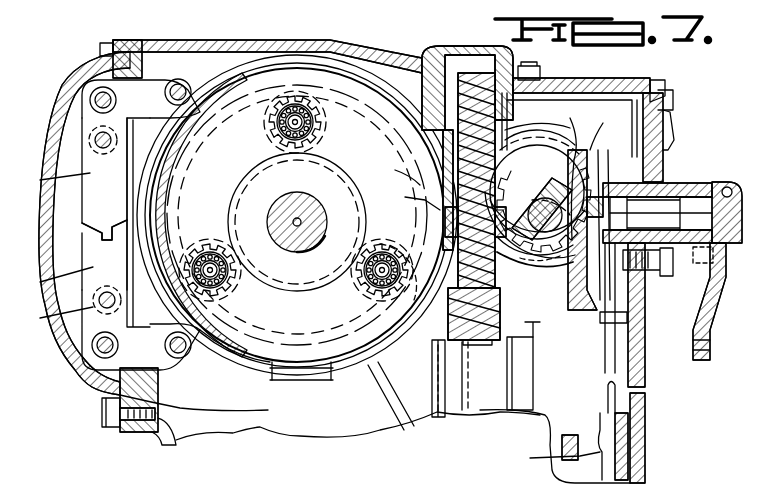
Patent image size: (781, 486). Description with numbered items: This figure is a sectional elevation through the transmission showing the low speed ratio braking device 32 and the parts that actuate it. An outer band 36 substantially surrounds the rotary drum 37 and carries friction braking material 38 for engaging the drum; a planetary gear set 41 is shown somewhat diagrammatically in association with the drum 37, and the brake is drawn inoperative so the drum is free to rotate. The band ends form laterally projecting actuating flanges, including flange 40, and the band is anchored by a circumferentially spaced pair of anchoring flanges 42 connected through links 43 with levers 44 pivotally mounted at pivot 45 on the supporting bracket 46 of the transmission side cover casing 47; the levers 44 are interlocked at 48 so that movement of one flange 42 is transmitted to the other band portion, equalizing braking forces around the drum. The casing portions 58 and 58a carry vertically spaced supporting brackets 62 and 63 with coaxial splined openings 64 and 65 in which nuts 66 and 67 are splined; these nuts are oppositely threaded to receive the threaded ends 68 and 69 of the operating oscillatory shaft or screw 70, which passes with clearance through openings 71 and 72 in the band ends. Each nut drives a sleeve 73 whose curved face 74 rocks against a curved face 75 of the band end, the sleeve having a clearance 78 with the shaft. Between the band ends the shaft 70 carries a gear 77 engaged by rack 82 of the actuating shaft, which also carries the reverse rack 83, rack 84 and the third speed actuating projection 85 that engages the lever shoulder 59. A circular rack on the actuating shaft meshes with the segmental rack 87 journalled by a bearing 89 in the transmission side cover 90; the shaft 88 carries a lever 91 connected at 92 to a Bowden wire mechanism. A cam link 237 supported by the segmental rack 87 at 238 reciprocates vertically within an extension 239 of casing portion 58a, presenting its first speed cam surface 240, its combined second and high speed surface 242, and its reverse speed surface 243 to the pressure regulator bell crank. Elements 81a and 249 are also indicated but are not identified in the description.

The low speed ratio braking device 32 is at (280, 382).
The outer band 36 is at (262, 60).
The drum 37 is at (258, 378).
The friction braking material 38 is at (334, 380).
The actuating flange 40 is at (445, 292).
The planetary gear set 41 is at (322, 140).
The anchoring flanges 42 is at (206, 78).
The links 43 is at (135, 84).
The levers 44 is at (52, 232).
The pivot 45 is at (52, 316).
The supporting bracket 46 is at (57, 147).
The transmission side cover casing 47 is at (53, 253).
The interlock 48 is at (90, 233).
The transmission casing portion 58 is at (578, 80).
The transmission casing portion 58a is at (632, 292).
The step actuating portion 59 is at (396, 173).
The supporting bracket 62 is at (520, 108).
The supporting bracket 63 is at (540, 322).
The splined opening 64 is at (522, 118).
The splined opening 65 is at (503, 310).
The nut 66 is at (520, 134).
The nut 67 is at (480, 344).
The threaded end 68 is at (472, 80).
The threaded end 69 is at (430, 366).
The operating oscillatory shaft 70 is at (534, 182).
The opening 71 is at (412, 194).
The opening 72 is at (395, 305).
The sleeve 73 is at (424, 158).
The curved face 74 is at (574, 176).
The curved face 75 is at (139, 406).
The gear 77 is at (530, 190).
The clearance 78 is at (445, 150).
The cover plate 81a is at (300, 52).
The rack 82 is at (535, 254).
The reverse rack 83 is at (590, 150).
The rack 84 is at (548, 268).
The third speed actuating projection 85 is at (585, 230).
The segmental rack 87 is at (598, 148).
The shaft 88 is at (680, 180).
The bearing 89 is at (695, 180).
The transmission side cover 90 is at (667, 140).
The lever 91 is at (728, 286).
The connection 92 is at (712, 345).
The cam link 237 is at (605, 356).
The support point 238 is at (661, 213).
The extension 239 is at (645, 330).
The first speed cam surface 240 is at (625, 442).
The second and high speed cam surface 242 is at (598, 428).
The reverse speed cam surface 243 is at (600, 468).
The pin 249 is at (562, 452).